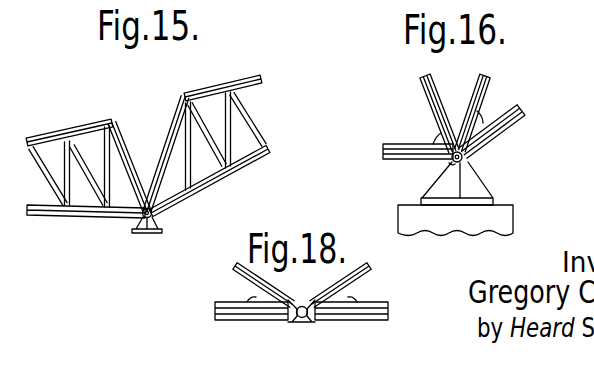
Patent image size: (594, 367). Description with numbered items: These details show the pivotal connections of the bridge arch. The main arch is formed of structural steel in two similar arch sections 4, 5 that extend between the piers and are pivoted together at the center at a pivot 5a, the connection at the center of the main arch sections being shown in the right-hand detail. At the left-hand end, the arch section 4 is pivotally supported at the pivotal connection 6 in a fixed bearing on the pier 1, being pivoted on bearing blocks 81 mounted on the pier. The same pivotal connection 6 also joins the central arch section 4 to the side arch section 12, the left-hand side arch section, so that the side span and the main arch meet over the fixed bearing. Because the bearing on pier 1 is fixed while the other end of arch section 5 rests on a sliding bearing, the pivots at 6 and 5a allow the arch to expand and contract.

In FIG. 16, the pier 1 is at (508, 222).
In FIG. 15, the arch section 4 is at (207, 184).
In FIG. 16, the arch section 4 is at (511, 120).
In FIG. 18, the arch section 4 is at (250, 318).
In FIG. 18, the arch section 5 is at (372, 316).
In FIG. 18, the center pivot 5a is at (303, 323).
In FIG. 15, the pivotal connection 6 is at (136, 223).
In FIG. 16, the pivotal connection 6 is at (452, 165).
In FIG. 15, the side arch section 12 is at (58, 212).
In FIG. 16, the side arch section 12 is at (403, 143).
In FIG. 15, the bearing block 81 is at (158, 225).
In FIG. 16, the bearing block 81 is at (480, 188).